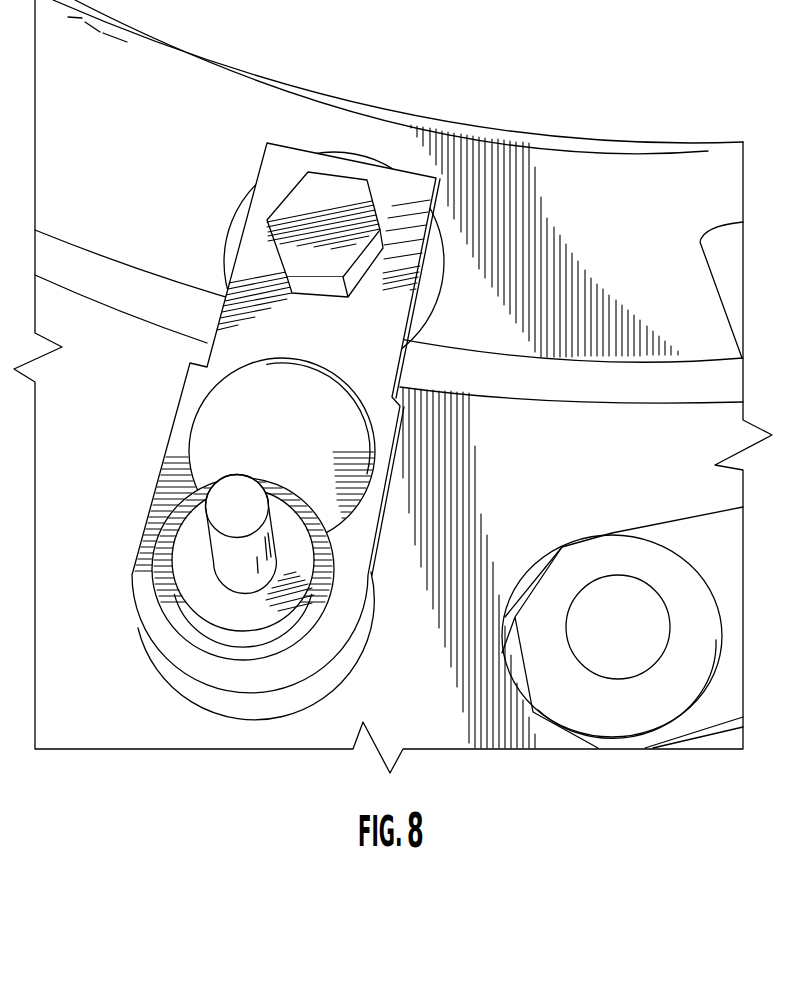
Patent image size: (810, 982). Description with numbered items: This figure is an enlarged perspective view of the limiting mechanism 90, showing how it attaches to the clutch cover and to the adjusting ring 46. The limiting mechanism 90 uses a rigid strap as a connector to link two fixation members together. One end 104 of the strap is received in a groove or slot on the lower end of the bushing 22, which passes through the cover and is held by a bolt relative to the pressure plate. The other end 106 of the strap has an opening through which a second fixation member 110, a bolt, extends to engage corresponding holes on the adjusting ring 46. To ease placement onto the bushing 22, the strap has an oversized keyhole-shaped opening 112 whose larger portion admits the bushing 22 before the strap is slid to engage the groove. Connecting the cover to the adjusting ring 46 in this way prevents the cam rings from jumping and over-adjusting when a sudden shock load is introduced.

The bushing 22 is at (317, 582).
The adjusting ring 46 is at (627, 335).
The limiting mechanism 90 is at (417, 544).
The end of the strap 104 is at (312, 648).
The other end of the strap 106 is at (422, 192).
The second fixation member 110 is at (355, 228).
The oversized opening 112 is at (332, 475).